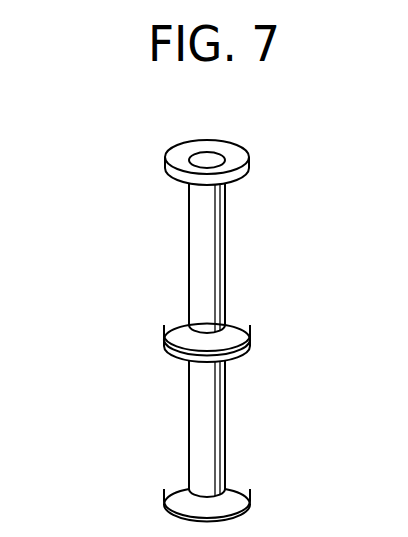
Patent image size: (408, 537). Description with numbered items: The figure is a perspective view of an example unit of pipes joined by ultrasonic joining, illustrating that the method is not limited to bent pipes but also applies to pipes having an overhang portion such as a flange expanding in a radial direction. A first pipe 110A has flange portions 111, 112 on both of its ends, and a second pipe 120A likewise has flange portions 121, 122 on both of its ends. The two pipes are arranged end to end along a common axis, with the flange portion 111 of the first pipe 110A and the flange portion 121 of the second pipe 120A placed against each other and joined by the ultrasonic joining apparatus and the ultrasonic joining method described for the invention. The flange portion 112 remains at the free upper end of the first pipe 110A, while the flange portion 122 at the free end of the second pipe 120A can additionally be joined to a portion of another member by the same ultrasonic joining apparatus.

The flange portion 112 is at (176, 163).
The first pipe 110A is at (208, 243).
The flange portion 111 is at (176, 328).
The flange portion 121 is at (176, 349).
The second pipe 120A is at (208, 418).
The flange portion 122 is at (176, 494).